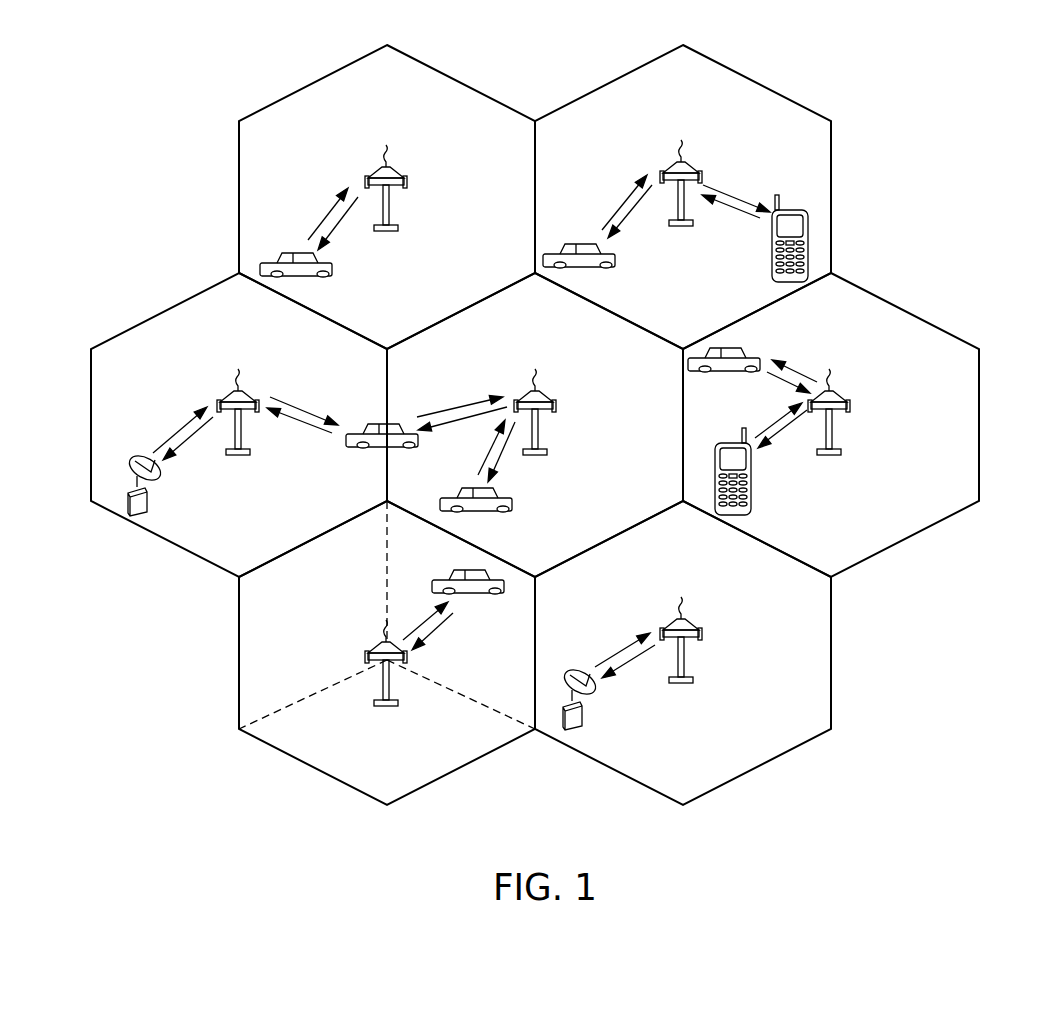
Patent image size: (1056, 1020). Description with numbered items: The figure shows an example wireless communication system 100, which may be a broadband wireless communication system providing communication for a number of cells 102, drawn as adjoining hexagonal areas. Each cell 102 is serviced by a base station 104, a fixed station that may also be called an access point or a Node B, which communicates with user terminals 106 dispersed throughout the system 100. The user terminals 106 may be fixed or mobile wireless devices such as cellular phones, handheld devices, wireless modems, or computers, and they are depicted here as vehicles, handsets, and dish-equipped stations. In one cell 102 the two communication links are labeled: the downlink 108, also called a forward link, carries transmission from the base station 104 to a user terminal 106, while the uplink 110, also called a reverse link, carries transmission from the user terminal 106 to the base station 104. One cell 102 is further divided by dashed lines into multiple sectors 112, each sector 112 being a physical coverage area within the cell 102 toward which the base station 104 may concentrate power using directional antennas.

The wireless communication system 100 is at (950, 140).
The cell 102 is at (322, 77).
The base station 104 is at (367, 650).
The user terminal 106 is at (333, 273).
The downlink 108 is at (335, 230).
The uplink 110 is at (327, 217).
The sector 112 is at (438, 762).